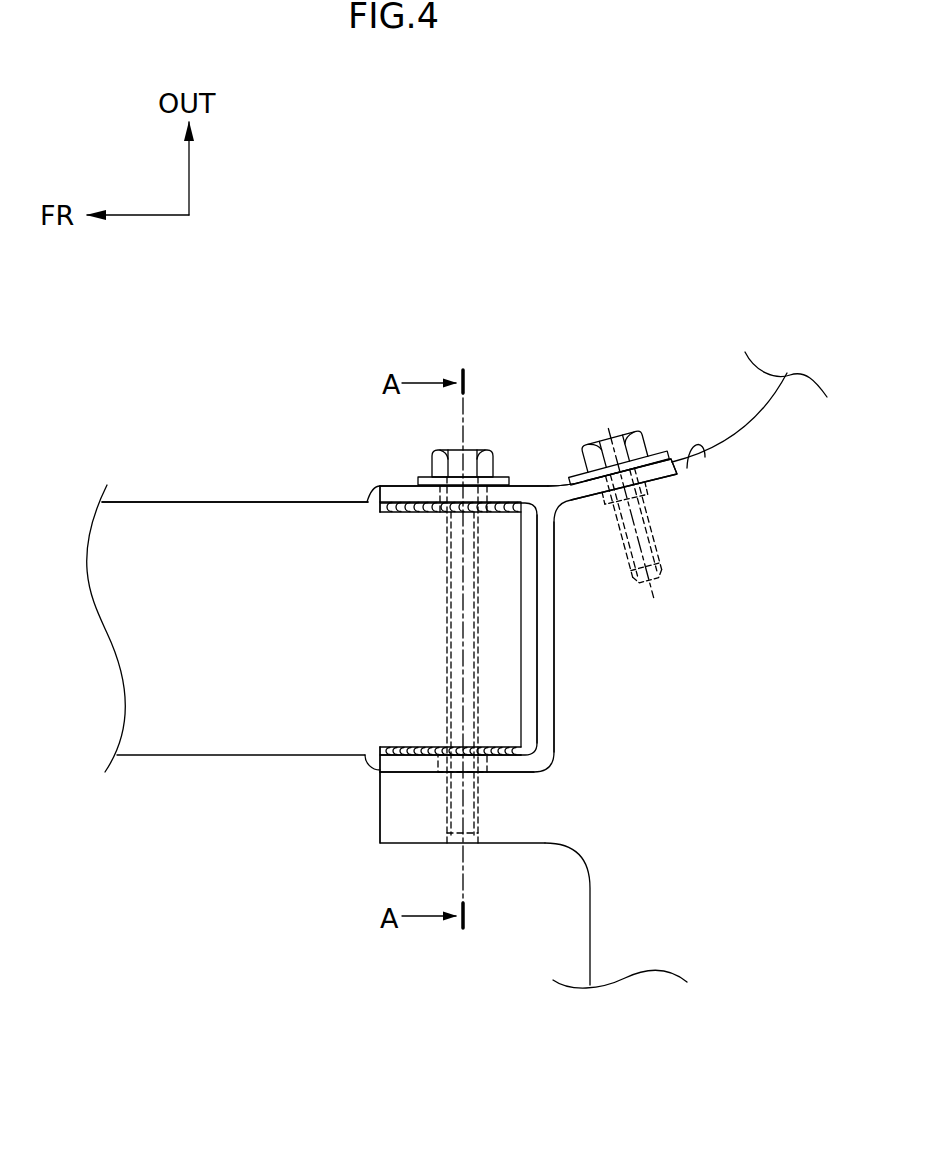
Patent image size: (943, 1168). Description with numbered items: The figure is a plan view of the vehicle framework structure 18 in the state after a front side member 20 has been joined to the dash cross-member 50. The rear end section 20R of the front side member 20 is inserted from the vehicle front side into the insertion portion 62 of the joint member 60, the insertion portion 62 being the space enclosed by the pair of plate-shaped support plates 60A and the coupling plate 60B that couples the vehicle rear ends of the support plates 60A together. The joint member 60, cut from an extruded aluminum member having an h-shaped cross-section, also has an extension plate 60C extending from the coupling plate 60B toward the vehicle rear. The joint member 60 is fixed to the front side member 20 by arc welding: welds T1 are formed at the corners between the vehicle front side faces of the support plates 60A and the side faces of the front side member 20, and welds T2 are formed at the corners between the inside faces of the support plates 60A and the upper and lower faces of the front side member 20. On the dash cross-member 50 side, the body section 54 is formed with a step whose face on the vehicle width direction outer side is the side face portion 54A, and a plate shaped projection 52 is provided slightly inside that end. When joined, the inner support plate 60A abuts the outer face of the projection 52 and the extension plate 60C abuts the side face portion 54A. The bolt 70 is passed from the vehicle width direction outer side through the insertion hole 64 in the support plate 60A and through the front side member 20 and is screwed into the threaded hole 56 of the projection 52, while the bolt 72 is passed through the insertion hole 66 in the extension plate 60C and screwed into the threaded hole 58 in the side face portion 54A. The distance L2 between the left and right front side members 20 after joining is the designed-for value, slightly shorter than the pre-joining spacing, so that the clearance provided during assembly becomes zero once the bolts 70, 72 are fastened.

The vehicle framework structure 18 is at (690, 205).
The front side member 20 is at (170, 497).
The rear end section 20R is at (285, 500).
The dash cross-member 50 is at (731, 431).
The projection 52 is at (390, 828).
The body section 54 is at (583, 836).
The side face portion 54A is at (704, 457).
The threaded hole 56 is at (474, 814).
The threaded hole 58 is at (668, 575).
The joint member 60 is at (541, 477).
The support plate 60A is at (398, 495).
The coupling plate 60B is at (552, 673).
The extension plate 60C is at (672, 460).
The insertion portion 62 is at (390, 788).
The insertion hole 64 is at (458, 506).
The insertion hole 66 is at (575, 450).
The bolt 70 is at (470, 458).
The bolt 72 is at (607, 440).
The weld T1 is at (378, 490).
The weld T2 is at (388, 513).
The distance L2 is at (183, 757).